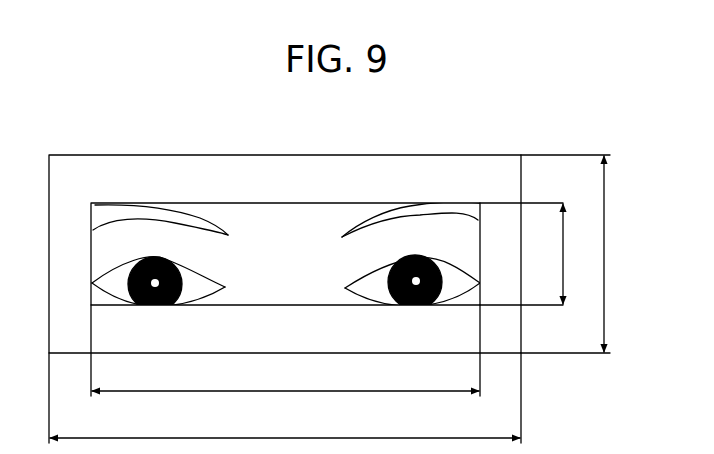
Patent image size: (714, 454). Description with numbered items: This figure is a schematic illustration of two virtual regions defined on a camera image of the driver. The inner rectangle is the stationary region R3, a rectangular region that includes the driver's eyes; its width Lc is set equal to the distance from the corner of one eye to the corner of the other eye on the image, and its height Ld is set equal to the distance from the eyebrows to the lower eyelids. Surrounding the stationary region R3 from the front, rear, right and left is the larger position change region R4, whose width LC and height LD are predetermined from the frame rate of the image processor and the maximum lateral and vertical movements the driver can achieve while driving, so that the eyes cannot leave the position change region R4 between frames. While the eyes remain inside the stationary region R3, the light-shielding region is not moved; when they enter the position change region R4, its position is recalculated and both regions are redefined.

The stationary region R3 is at (302, 227).
The position change region R4 is at (477, 180).
The height of the stationary region Ld is at (578, 254).
The height of the position change region LD is at (619, 254).
The width of the stationary region Lc is at (285, 379).
The width of the position change region LC is at (285, 425).